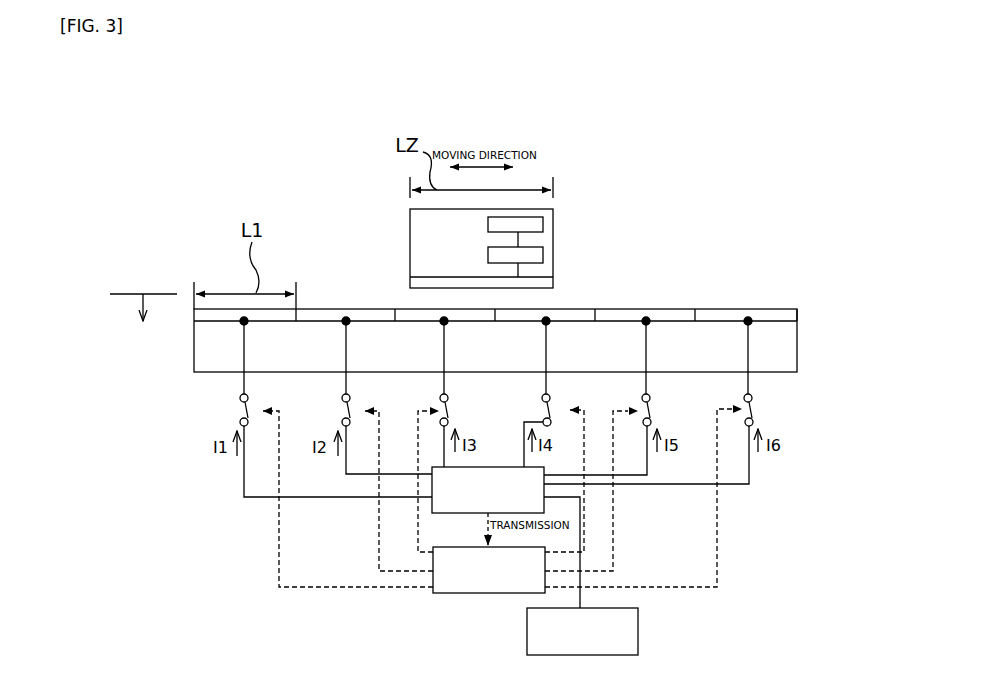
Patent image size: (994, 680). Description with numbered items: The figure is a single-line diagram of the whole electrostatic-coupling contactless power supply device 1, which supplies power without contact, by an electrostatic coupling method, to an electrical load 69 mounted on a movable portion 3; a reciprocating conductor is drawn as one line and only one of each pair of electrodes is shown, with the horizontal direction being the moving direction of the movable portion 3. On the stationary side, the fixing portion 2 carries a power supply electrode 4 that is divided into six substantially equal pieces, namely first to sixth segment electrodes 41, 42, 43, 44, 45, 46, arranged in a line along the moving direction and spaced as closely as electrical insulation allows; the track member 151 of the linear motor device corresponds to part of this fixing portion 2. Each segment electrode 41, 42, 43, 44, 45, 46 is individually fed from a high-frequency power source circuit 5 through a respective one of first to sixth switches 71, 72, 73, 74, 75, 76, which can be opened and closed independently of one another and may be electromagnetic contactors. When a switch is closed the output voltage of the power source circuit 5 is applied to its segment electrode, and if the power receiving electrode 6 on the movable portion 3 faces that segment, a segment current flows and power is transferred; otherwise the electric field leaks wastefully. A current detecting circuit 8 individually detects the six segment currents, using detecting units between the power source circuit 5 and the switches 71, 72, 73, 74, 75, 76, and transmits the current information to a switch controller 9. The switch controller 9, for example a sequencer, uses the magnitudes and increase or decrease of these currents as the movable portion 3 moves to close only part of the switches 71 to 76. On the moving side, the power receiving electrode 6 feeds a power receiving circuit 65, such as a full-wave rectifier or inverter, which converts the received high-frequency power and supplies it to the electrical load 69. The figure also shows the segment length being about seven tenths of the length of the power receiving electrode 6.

The electrostatic-coupling contactless power supply device 1 is at (204, 126).
The fixing portion 2 is at (140, 325).
The movable portion 3 is at (418, 245).
The power supply electrode 4 is at (200, 284).
The high-frequency power source circuit 5 is at (575, 643).
The power receiving electrode 6 is at (418, 280).
The current detecting circuit 8 is at (481, 503).
The switch controller 9 is at (481, 583).
The first segment electrode 41 is at (220, 315).
The second segment electrode 42 is at (327, 315).
The third segment electrode 43 is at (409, 312).
The fourth segment electrode 44 is at (576, 312).
The fifth segment electrode 45 is at (672, 309).
The sixth segment electrode 46 is at (770, 308).
The power receiving circuit 65 is at (535, 255).
The electrical load 69 is at (535, 224).
The first switch 71 is at (250, 398).
The second switch 72 is at (352, 398).
The third switch 73 is at (450, 397).
The fourth switch 74 is at (552, 397).
The fifth switch 75 is at (652, 397).
The sixth switch 76 is at (757, 402).
The track member 151 is at (790, 336).